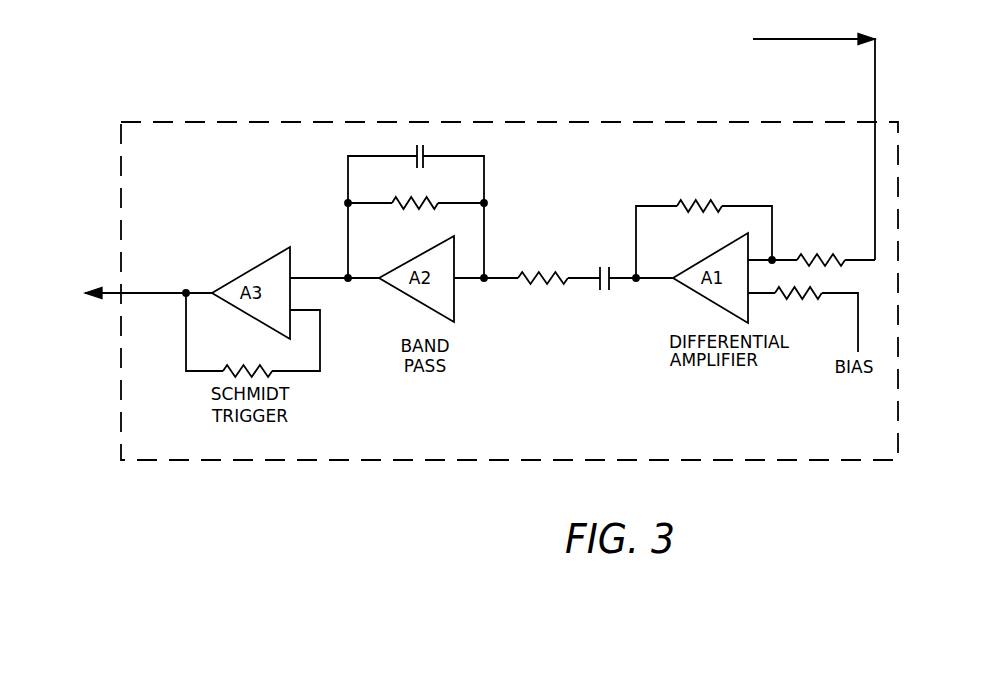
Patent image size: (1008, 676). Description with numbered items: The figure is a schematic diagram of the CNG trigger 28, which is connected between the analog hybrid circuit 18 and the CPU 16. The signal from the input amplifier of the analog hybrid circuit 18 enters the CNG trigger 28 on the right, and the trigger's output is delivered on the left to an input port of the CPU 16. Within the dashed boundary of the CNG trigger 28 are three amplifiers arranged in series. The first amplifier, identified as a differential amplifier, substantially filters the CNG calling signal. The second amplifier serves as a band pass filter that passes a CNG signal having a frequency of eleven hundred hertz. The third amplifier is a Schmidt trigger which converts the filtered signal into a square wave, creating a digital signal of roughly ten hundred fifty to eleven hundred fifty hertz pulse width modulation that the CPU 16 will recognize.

The CPU 16 is at (122, 300).
The analog hybrid circuit 18 is at (739, 132).
The CNG trigger 28 is at (219, 461).